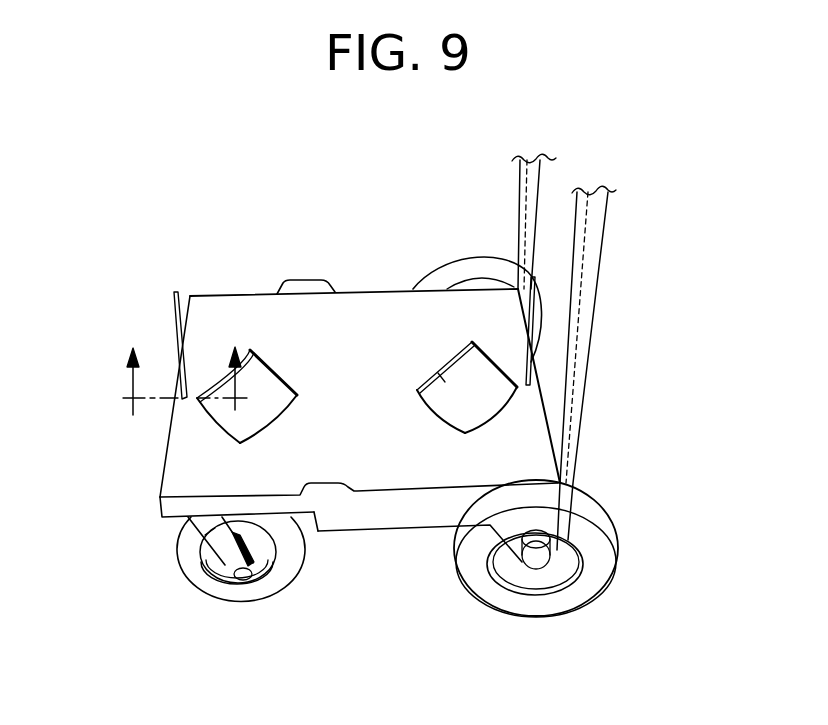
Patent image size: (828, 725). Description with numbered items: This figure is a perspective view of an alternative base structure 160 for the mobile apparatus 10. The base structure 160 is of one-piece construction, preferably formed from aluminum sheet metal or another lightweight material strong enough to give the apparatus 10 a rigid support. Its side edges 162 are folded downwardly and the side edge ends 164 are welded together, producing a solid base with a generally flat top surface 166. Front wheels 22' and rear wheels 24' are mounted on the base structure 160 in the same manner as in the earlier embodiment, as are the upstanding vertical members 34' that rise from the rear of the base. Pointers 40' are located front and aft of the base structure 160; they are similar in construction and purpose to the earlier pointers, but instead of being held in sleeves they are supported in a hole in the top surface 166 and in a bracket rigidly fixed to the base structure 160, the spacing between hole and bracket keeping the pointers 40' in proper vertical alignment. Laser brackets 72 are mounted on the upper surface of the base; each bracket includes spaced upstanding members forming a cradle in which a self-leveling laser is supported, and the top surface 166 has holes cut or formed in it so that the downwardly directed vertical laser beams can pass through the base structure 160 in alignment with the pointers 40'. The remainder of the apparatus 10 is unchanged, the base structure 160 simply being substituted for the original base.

The apparatus 10 is at (183, 360).
The front wheels 22' is at (185, 559).
The rear wheels 24' is at (559, 437).
The upstanding vertical members 34' is at (577, 352).
The pointers 40' is at (402, 300).
The laser bracket 72 is at (443, 377).
The base structure 160 is at (366, 292).
The side edges 162 is at (300, 509).
The side edge ends 164 is at (161, 499).
The top surface 166 is at (270, 308).